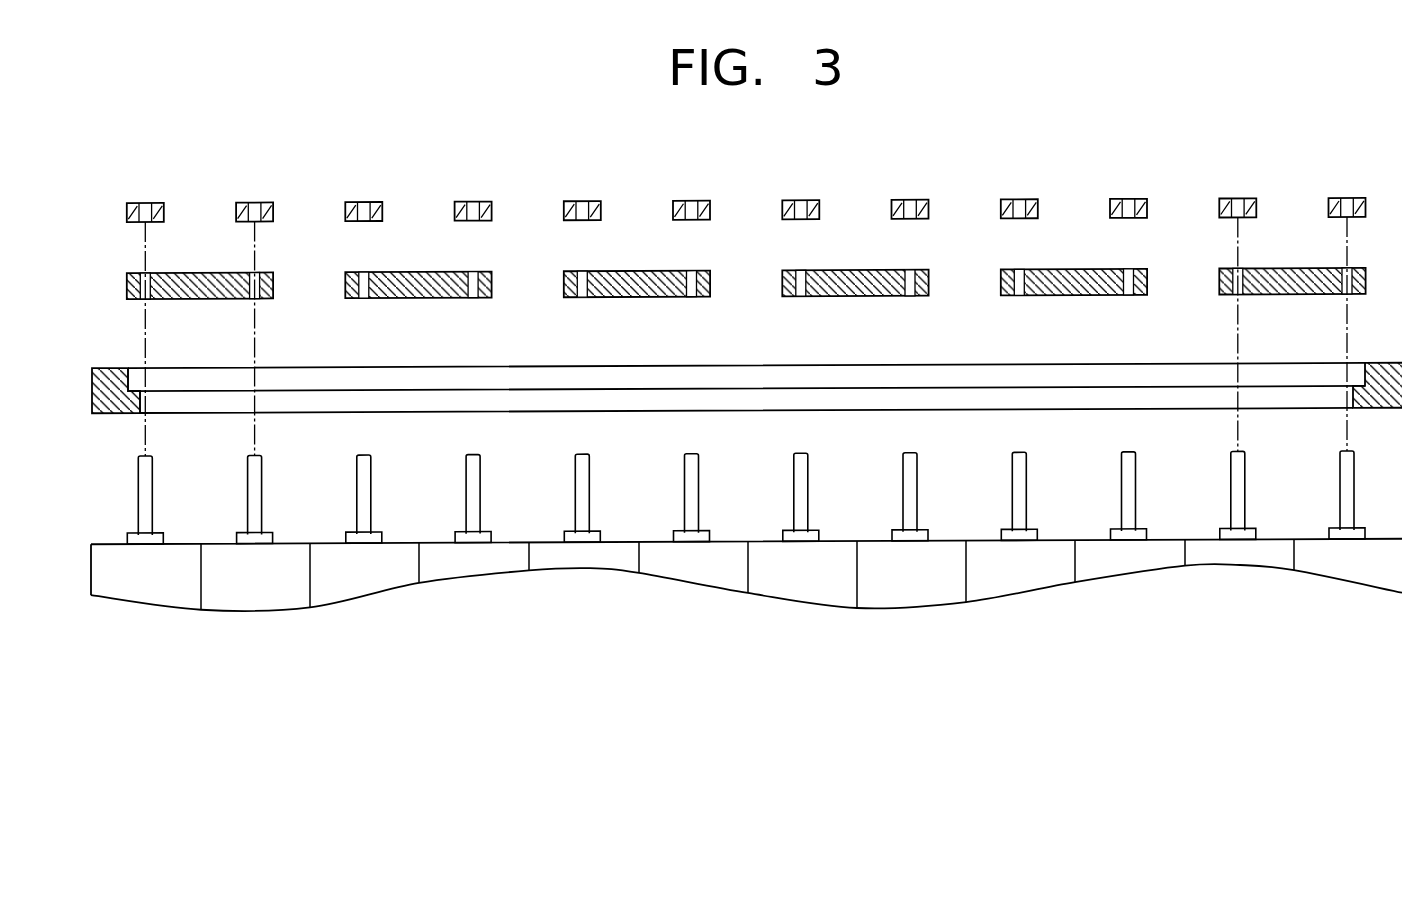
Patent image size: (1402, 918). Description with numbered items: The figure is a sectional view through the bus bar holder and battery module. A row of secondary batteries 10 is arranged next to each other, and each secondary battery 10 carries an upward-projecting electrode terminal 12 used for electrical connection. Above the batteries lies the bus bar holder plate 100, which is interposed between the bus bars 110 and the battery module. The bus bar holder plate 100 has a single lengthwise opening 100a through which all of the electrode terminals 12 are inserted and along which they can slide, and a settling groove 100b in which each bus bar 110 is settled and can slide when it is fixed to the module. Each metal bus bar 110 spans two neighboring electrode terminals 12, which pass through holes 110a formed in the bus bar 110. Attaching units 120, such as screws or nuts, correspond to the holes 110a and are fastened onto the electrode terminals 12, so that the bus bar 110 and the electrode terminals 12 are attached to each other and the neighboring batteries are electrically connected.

The secondary battery 10 is at (273, 590).
The electrode terminal 12 is at (251, 541).
The bus bar holder plate 100 is at (740, 398).
The opening 100a is at (143, 368).
The settling groove 100b is at (143, 412).
The bus bar 110 is at (746, 262).
The hole 110a is at (474, 282).
The attaching unit 120 is at (478, 203).